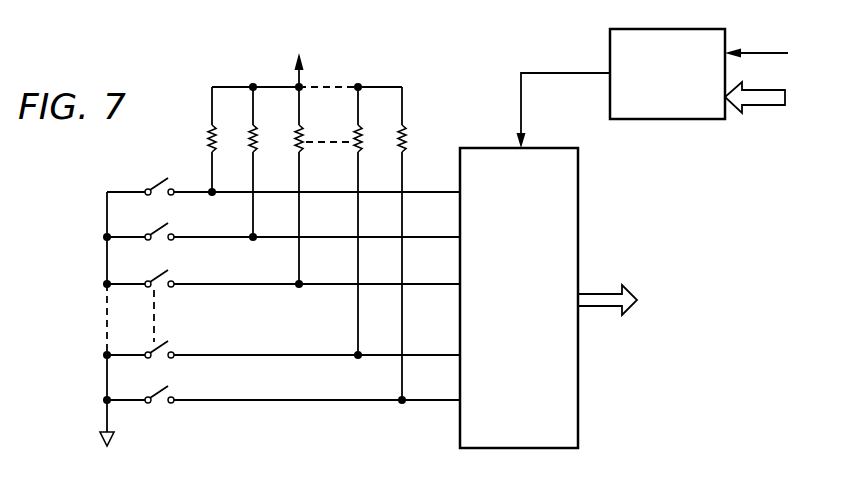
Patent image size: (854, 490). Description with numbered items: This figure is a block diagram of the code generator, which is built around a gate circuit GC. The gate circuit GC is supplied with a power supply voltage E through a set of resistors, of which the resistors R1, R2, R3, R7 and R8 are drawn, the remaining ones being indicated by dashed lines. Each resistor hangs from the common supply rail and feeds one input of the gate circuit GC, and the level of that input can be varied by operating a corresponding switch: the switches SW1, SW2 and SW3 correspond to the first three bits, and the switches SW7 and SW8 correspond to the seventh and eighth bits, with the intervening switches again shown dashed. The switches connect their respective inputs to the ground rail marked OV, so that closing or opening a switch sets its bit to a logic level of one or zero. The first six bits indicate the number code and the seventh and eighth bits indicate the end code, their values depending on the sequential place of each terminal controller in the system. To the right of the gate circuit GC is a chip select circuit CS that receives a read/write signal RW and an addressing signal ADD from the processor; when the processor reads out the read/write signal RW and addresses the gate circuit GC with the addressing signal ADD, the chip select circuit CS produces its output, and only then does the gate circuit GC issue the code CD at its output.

The resistor R1 is at (221, 141).
The resistor R2 is at (262, 164).
The resistor R3 is at (308, 187).
The resistor R7 is at (367, 223).
The resistor R8 is at (411, 245).
The switch SW1 is at (283, 182).
The switch SW2 is at (283, 227).
The switch SW3 is at (283, 274).
The switch SW7 is at (283, 345).
The switch SW8 is at (283, 390).
The gate circuit GC is at (519, 298).
The chip select circuit CS is at (667, 74).
The code CD is at (622, 300).
The addressing signal ADD is at (760, 92).
The read/write signal RW is at (758, 45).
The power supply voltage E is at (295, 61).
The ground 0V OV is at (105, 461).